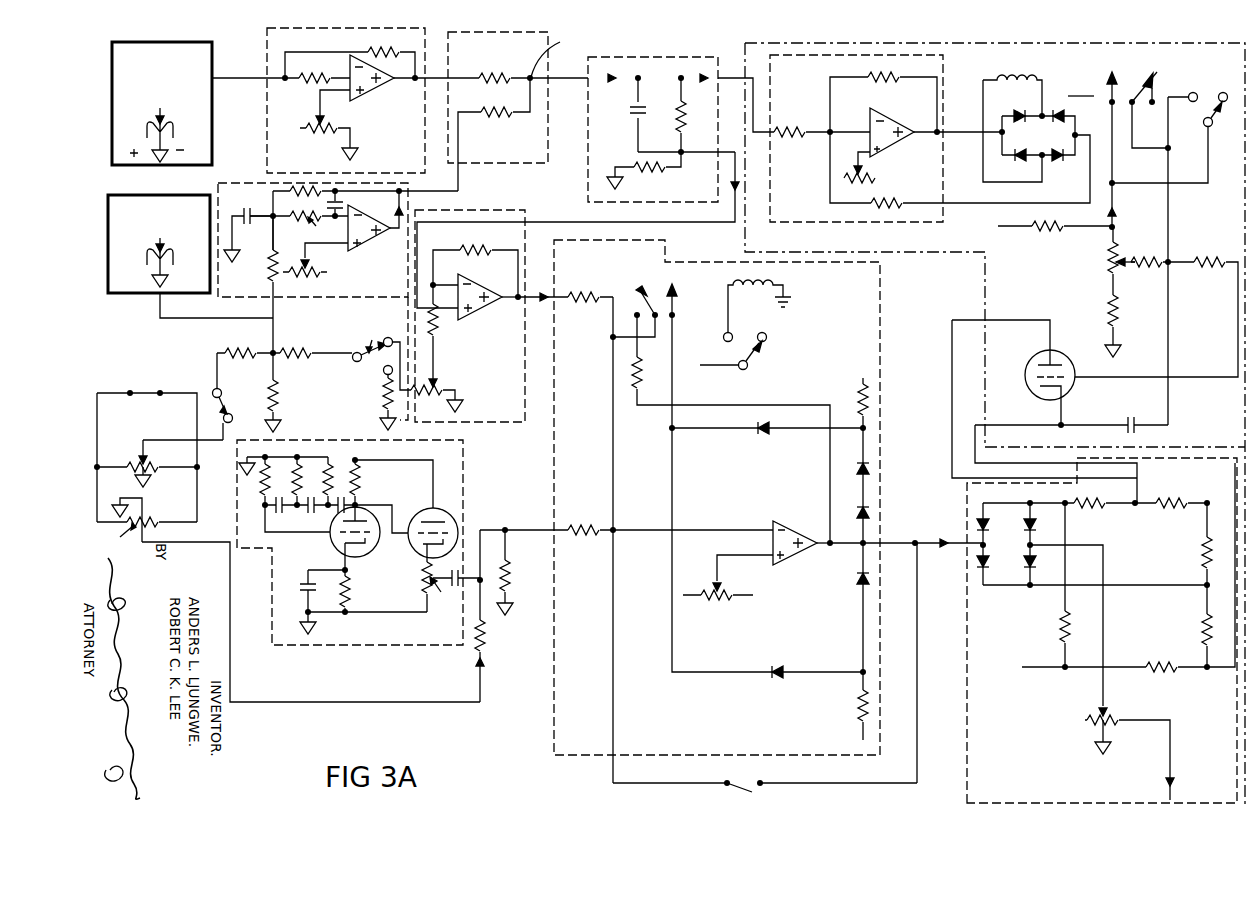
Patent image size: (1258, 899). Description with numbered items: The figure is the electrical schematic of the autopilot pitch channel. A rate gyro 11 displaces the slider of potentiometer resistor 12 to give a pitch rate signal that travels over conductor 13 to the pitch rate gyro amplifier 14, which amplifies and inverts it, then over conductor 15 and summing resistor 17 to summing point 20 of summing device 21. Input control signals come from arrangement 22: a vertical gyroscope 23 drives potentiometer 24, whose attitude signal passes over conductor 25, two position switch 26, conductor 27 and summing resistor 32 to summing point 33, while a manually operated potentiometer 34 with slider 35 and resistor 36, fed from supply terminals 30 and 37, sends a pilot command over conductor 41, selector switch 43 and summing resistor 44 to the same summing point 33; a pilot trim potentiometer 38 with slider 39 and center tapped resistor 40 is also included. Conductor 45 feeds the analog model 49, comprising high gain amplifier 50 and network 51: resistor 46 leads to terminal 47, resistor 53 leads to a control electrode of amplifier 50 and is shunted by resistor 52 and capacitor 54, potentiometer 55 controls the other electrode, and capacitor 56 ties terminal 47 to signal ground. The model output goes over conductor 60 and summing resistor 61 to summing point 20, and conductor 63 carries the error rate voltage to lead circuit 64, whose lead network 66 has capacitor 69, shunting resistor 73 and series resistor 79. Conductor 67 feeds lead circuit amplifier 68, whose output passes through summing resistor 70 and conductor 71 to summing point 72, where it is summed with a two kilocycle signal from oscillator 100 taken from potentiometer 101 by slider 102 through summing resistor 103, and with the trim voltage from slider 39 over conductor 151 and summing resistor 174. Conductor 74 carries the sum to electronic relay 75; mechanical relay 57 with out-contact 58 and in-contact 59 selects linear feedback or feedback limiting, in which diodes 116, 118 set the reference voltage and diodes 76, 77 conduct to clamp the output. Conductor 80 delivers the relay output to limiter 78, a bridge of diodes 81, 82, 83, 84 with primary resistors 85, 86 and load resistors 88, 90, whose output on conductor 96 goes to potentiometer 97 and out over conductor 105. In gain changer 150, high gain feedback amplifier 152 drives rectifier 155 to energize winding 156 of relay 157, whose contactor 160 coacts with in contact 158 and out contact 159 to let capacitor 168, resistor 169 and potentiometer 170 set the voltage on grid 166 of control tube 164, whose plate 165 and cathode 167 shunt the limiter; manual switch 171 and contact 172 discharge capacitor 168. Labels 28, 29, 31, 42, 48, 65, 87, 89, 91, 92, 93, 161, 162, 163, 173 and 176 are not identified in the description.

The rate gyro 11 is at (187, 43).
The potentiometer resistor 12 is at (165, 135).
The conductor 13 is at (217, 78).
The pitch rate gyro amplifier 14 is at (380, 94).
The conductor 15 is at (448, 78).
The summing resistor 17 is at (494, 80).
The summing point 20 is at (538, 83).
The summing device 21 is at (548, 131).
The arrangement 22 is at (189, 353).
The vertical gyroscope 23 is at (181, 195).
The potentiometer 24 is at (166, 254).
The conductor 25 is at (175, 318).
The two position switch 26 is at (370, 337).
The conductor 27 is at (356, 351).
The resistor 28 is at (384, 372).
The switch contact 29 is at (397, 364).
The terminal 30 is at (1113, 689).
The relay 31 is at (711, 280).
The summing resistor 32 is at (306, 356).
The summing point 33 is at (274, 353).
The manually operated potentiometer 34 is at (152, 472).
The slider 35 is at (153, 440).
The resistor 36 is at (156, 474).
The terminal 37 is at (130, 393).
The pilot trim potentiometer 38 is at (116, 536).
The adjustable slider 39 is at (194, 541).
The center tapped resistor 40 is at (151, 525).
The conductor 41 is at (224, 440).
The switch contact 42 is at (233, 416).
The selector switch 43 is at (223, 395).
The summing resistor 44 is at (254, 349).
The conductor 45 is at (272, 318).
The resistor 46 is at (267, 270).
The terminal 47 is at (261, 205).
The model network 48 is at (298, 243).
The analog model 49 is at (336, 300).
The high gain amplifier 50 is at (364, 212).
The network 51 is at (309, 207).
The resistor 52 is at (286, 190).
The resistor 53 is at (316, 223).
The capacitor 54 is at (343, 205).
The potentiometer 55 is at (310, 268).
The capacitor 56 is at (244, 218).
The mechanical relay 57 is at (707, 329).
The out-contact 58 is at (722, 414).
The in-contact 59 is at (676, 302).
The conductor 60 is at (443, 191).
The summing resistor 61 is at (495, 114).
The conductor 63 is at (578, 83).
The lead circuit 64 is at (588, 176).
The lead 65 is at (742, 101).
The lead network 66 is at (665, 105).
The conductor 67 is at (739, 156).
The lead circuit amplifier 68 is at (471, 279).
The capacitor 69 is at (636, 122).
The summing resistor 70 is at (577, 296).
The conductor 71 is at (613, 363).
The summing point 72 is at (616, 533).
The resistor 73 is at (684, 128).
The conductor 74 is at (697, 530).
The electronic relay 75 is at (769, 577).
The diode 76 is at (763, 427).
The diode 77 is at (780, 670).
The limiter 78 is at (967, 617).
The series resistor 79 is at (658, 176).
The conductor 80 is at (913, 548).
The diode 81 is at (981, 574).
The diode 82 is at (975, 523).
The diode 83 is at (1024, 522).
The diode 84 is at (1026, 572).
The primary resistor 85 is at (1103, 501).
The primary resistor 86 is at (1209, 628).
The resistor 87 is at (1062, 628).
The load resistor 88 is at (1175, 507).
The resistor 89 is at (1203, 554).
The load resistor 90 is at (1160, 664).
The junction 91 is at (1209, 502).
The junction 92 is at (1068, 669).
The junction 93 is at (1147, 491).
The conductor 96 is at (1074, 545).
The adjustable voltage dividing potentiometer 97 is at (1130, 716).
The oscillator 100 is at (463, 464).
The voltage dividing potentiometer 101 is at (441, 584).
The adjustable slider 102 is at (456, 570).
The summing resistor 103 is at (602, 536).
The conductor 105 is at (1173, 800).
The diode 116 is at (856, 484).
The diode 118 is at (855, 595).
The gain changer 150 is at (818, 252).
The conductor 151 is at (358, 702).
The high gain feedback amplifier 152 is at (889, 119).
The rectifier 155 is at (1052, 146).
The operating winding 156 is at (983, 79).
The mechanical type relay 157 is at (1083, 87).
The in contact 158 is at (1130, 66).
The out contact 159 is at (1150, 80).
The operating contactor 160 is at (1148, 119).
The lead 161 is at (642, 788).
The switch 162 is at (752, 792).
The lead 163 is at (919, 722).
The control tube 164 is at (1018, 387).
The plate 165 is at (1052, 348).
The grid 166 is at (1234, 273).
The cathode 167 is at (1068, 414).
The capacitor 168 is at (1136, 430).
The resistor 169 is at (1142, 260).
The potentiometer 170 is at (1122, 267).
The manually operable switch 171 is at (1214, 120).
The contact 172 is at (1178, 112).
The on-off switch 173 is at (1221, 63).
The summing resistor 174 is at (481, 632).
The lead 176 is at (608, 335).